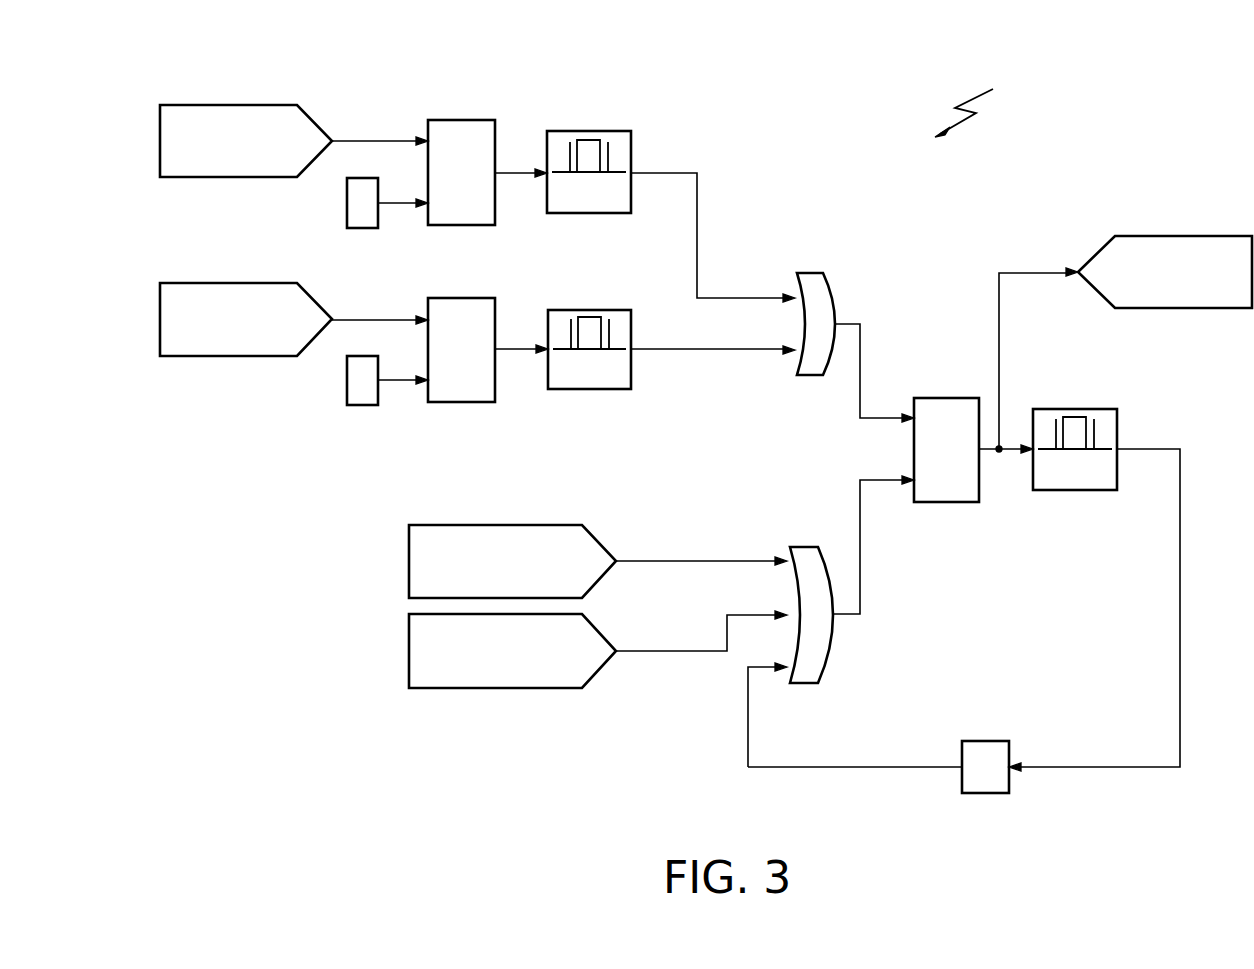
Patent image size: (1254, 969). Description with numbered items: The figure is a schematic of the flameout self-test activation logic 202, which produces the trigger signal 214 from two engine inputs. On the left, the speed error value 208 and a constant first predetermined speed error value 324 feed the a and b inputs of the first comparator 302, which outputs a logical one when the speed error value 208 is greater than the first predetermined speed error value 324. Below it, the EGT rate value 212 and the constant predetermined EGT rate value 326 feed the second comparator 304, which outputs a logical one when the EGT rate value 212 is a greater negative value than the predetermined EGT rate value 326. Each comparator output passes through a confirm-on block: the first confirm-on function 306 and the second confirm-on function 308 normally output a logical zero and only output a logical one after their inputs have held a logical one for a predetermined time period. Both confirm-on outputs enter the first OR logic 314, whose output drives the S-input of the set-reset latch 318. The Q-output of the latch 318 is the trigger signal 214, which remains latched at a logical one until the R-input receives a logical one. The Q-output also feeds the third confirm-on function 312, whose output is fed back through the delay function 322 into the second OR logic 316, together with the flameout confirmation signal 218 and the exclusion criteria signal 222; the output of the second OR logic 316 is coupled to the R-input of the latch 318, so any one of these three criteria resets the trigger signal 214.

The flameout self-test activation logic 202 is at (756, 421).
The speed error value 208 is at (213, 104).
The EGT rate value 212 is at (213, 282).
The trigger signal 214 is at (1180, 235).
The flameout confirmation signal 218 is at (493, 524).
The exclusion criteria signal 222 is at (497, 690).
The first comparator 302 is at (462, 118).
The second comparator 304 is at (462, 297).
The first confirm-on function 306 is at (590, 130).
The second confirm-on function 308 is at (592, 309).
The third confirm-on function 312 is at (1077, 408).
The first OR logic 314 is at (813, 271).
The second OR logic 316 is at (803, 546).
The set-reset (S/R) latch 318 is at (943, 397).
The delay function 322 is at (988, 740).
The first predetermined speed error value 324 is at (346, 205).
The predetermined EGT rate value 326 is at (346, 382).